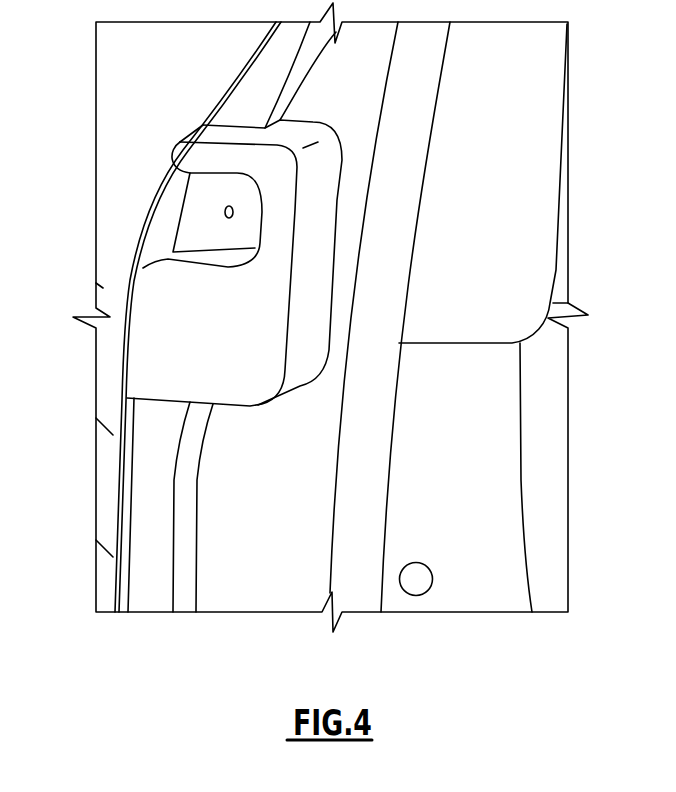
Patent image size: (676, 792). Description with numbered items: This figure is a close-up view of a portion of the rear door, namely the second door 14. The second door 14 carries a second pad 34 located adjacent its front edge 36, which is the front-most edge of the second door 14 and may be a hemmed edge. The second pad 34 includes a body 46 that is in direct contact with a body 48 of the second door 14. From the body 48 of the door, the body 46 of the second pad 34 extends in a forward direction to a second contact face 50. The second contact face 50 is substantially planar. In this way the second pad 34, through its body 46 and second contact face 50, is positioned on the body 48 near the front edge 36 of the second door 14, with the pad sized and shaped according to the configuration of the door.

The second door 14 is at (95, 608).
The second pad 34 is at (158, 287).
The front edge 36 is at (115, 503).
The body 46 is at (303, 263).
The body 48 is at (284, 580).
The second contact face 50 is at (245, 375).